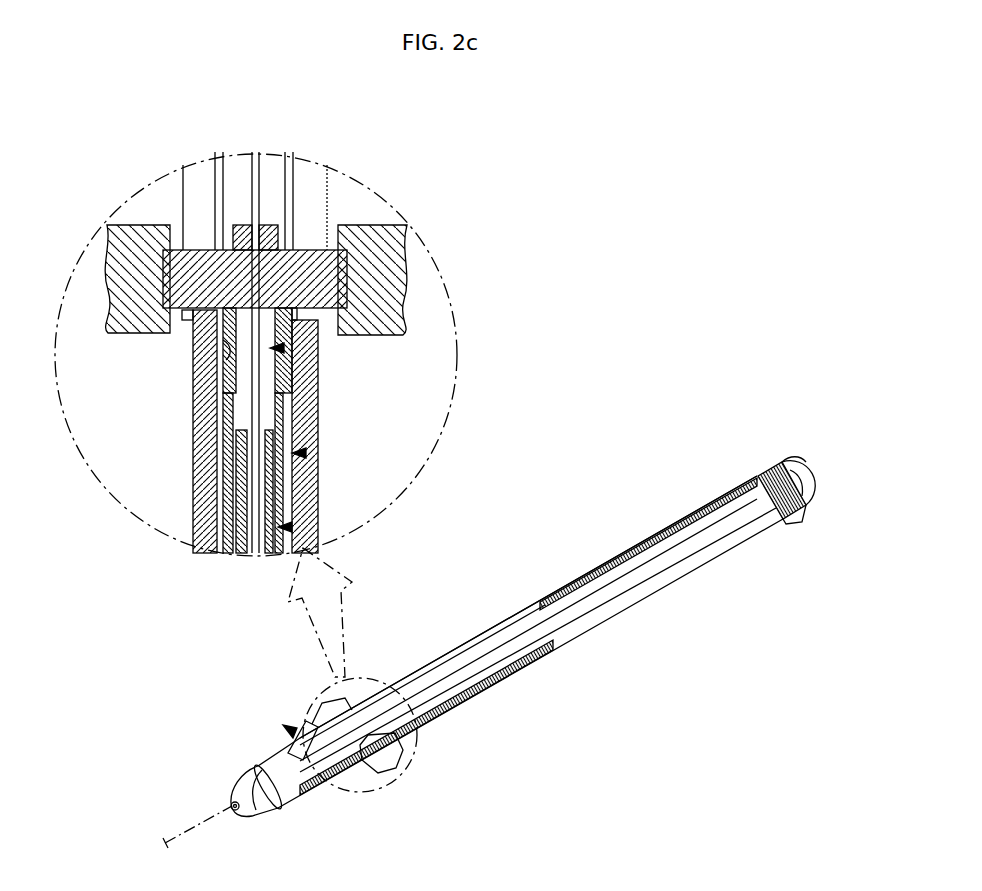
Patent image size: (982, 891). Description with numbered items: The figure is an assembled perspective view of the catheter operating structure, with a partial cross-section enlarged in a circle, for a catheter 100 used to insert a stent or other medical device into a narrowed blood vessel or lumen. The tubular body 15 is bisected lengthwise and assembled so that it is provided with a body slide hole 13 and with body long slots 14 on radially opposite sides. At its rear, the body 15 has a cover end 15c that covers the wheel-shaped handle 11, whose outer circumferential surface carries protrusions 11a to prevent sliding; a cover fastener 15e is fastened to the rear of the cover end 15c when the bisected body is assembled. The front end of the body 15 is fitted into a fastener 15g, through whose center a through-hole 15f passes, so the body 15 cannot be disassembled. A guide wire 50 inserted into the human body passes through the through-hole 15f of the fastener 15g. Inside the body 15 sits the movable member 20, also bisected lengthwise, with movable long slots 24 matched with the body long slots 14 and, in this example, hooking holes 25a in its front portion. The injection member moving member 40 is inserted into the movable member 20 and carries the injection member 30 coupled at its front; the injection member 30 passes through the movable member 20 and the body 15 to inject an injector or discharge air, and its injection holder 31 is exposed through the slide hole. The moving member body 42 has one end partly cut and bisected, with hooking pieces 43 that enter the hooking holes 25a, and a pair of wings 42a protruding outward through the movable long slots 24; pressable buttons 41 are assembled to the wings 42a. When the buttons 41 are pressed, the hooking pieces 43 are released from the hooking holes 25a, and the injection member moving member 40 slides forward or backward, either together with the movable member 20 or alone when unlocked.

The catheter 100 is at (495, 600).
The handle 11 is at (762, 470).
The protrusions 11a is at (800, 478).
The body slide hole 13 is at (455, 652).
The body long slots 14 is at (308, 167).
The tubular body 15 is at (200, 437).
The cover end 15c is at (775, 462).
The cover fastener 15e is at (792, 458).
The through-hole 15f is at (228, 806).
The fastener 15g is at (277, 795).
The movable member 20 is at (322, 440).
The movable long slots 24 is at (285, 162).
The hooking holes 25a is at (227, 378).
The injection member 30 is at (292, 527).
The injection holder 31 is at (288, 743).
The injection member moving member 40 is at (284, 348).
The pressable buttons 41 is at (390, 275).
The moving member body 42 is at (306, 453).
The wings 42a is at (310, 262).
The hooking pieces 43 is at (232, 355).
The guide wire 50 is at (195, 834).